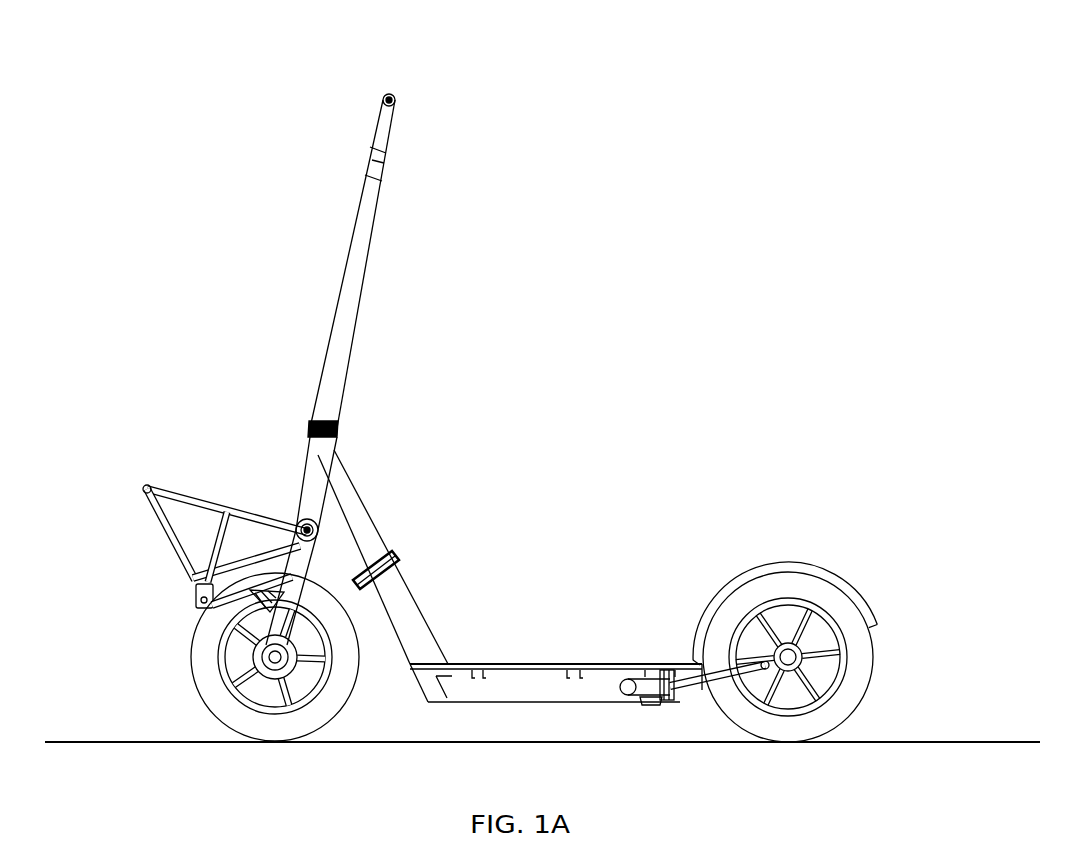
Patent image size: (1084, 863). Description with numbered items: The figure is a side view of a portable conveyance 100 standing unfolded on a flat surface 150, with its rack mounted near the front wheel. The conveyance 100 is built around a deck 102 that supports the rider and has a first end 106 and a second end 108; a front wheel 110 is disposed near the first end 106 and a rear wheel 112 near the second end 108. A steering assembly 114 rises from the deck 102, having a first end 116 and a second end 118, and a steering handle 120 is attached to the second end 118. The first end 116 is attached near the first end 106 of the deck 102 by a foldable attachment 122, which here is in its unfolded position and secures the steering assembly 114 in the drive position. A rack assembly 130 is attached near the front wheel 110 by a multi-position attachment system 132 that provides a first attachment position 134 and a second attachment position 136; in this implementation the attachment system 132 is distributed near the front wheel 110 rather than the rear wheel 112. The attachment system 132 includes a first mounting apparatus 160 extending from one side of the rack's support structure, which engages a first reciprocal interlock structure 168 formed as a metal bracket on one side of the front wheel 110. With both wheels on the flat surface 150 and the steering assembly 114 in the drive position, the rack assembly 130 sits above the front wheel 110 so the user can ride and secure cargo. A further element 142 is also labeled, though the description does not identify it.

The portable conveyance 100 is at (188, 108).
The deck 102 is at (498, 667).
The first end of the deck 106 is at (411, 667).
The second end of the deck 108 is at (702, 663).
The front wheel 110 is at (275, 697).
The rear wheel 112 is at (862, 633).
The steering assembly 114 is at (362, 278).
The first end of the steering assembly 116 is at (307, 473).
The second end of the steering assembly 118 is at (381, 177).
The steering handle 120 is at (392, 100).
The foldable attachment 122 is at (398, 555).
The rack assembly 130 is at (261, 494).
The multi-position attachment system 132 is at (212, 623).
The first attachment position 134 is at (200, 598).
The second attachment position 136 is at (282, 660).
The hinge pivot 142 is at (315, 518).
The flat surface 150 is at (132, 742).
The first mounting apparatus 160 is at (162, 531).
The first reciprocal interlock structure 168 is at (264, 586).